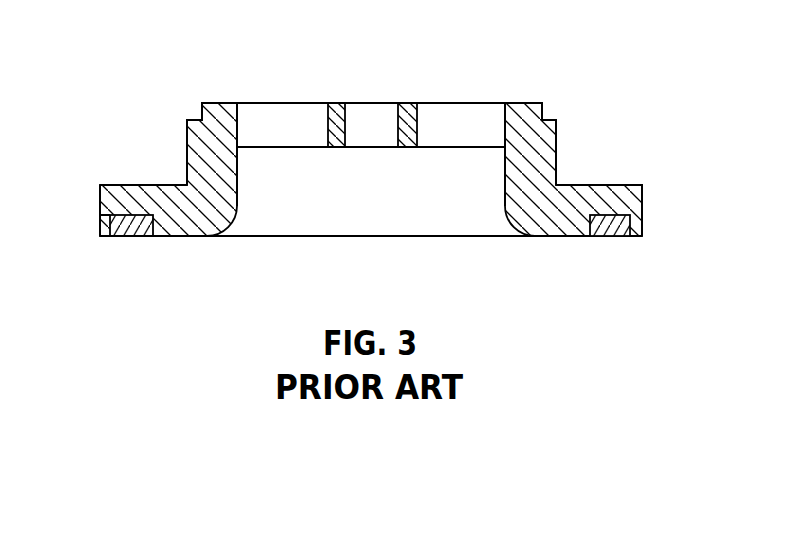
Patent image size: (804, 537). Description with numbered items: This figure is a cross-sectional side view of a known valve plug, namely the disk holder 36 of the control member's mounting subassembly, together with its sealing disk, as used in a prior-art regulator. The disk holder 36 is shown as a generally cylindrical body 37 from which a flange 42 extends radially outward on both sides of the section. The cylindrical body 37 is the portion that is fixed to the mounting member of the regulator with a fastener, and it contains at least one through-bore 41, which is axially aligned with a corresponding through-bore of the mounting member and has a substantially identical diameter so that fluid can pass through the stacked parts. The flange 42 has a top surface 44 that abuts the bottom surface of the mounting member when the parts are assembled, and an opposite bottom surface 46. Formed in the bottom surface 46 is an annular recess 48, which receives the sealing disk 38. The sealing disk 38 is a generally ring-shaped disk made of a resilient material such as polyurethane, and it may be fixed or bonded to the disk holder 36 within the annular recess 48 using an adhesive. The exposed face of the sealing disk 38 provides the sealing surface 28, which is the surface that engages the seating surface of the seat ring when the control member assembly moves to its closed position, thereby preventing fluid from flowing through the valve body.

The disk holder 36 is at (613, 78).
The cylindrical body 37 is at (200, 138).
The through-bore 41 is at (240, 120).
The top surface 44 is at (135, 185).
The flange 42 is at (614, 196).
The sealing disk 38 is at (133, 222).
The annular recess 48 is at (108, 224).
The bottom surface 46 is at (190, 237).
The sealing surface 28 is at (140, 237).